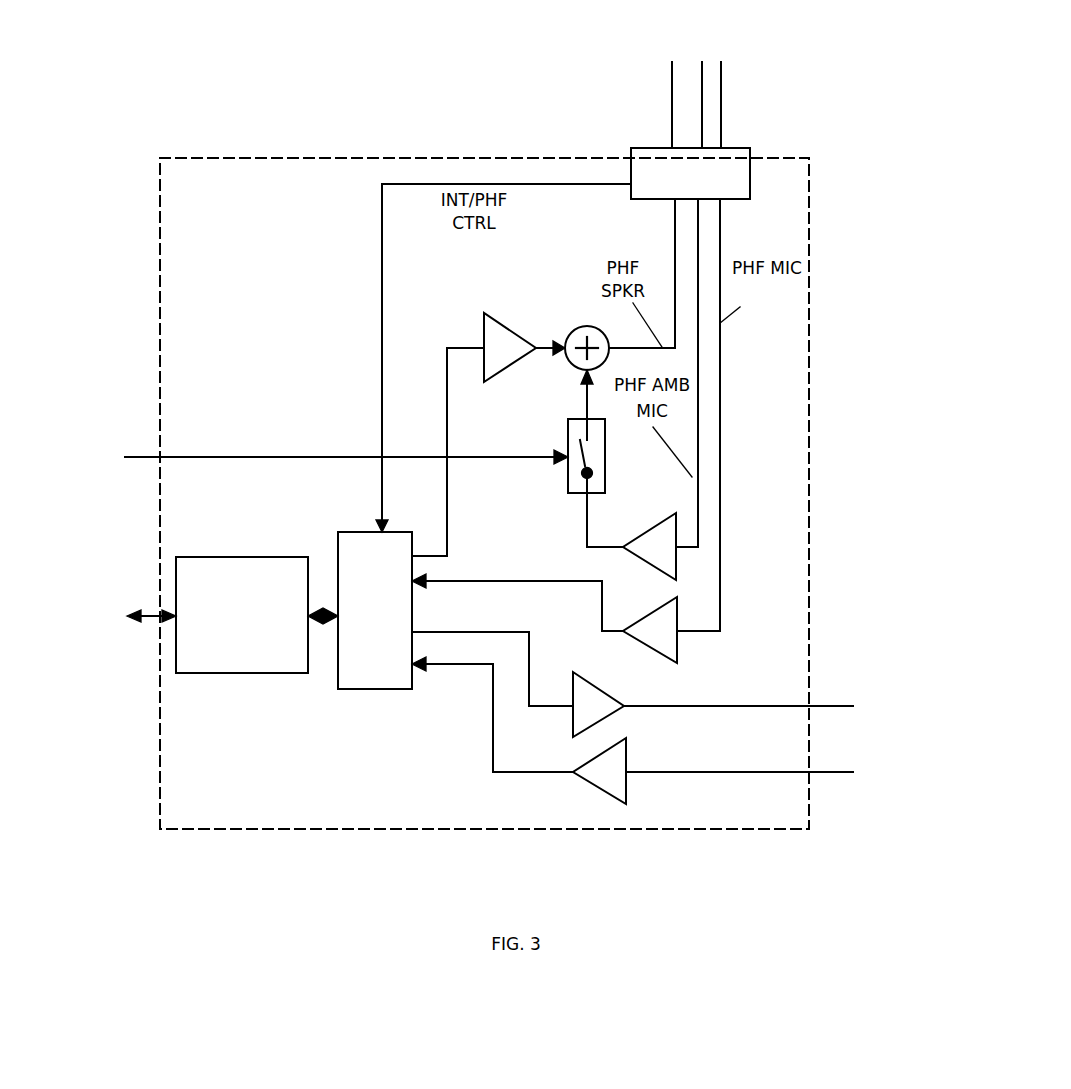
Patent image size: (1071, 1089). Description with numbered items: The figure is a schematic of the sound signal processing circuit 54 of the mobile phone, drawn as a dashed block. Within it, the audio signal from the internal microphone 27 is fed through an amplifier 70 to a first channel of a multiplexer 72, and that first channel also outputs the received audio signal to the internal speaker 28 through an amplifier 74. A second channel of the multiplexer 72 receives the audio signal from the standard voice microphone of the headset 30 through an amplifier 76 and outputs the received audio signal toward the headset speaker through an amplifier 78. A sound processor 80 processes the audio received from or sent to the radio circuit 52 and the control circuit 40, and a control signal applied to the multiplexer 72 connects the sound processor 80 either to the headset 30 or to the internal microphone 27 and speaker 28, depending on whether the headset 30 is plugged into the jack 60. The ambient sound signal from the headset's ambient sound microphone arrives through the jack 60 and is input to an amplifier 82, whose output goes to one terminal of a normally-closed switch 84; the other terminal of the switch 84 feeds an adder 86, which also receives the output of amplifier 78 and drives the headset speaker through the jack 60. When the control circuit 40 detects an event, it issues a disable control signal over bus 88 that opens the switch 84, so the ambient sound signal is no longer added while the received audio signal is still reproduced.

The sound signal processing circuit 54 is at (484, 462).
The headphone jack 60 is at (726, 152).
The headset 30 is at (695, 81).
The amplifier 78 is at (488, 415).
The adder 86 is at (593, 284).
The normally-closed switch 84 is at (553, 458).
The bus 88 is at (331, 418).
The amplifier 82 is at (645, 389).
The amplifier 76 is at (587, 439).
The amplifier 74 is at (597, 684).
The amplifier 70 is at (602, 793).
The multiplexer 72 is at (345, 643).
The sound processor 80 is at (257, 589).
The control circuit 40 is at (92, 487).
The radio circuit 52 is at (106, 668).
The speaker 28 is at (854, 660).
The microphone 27 is at (854, 812).